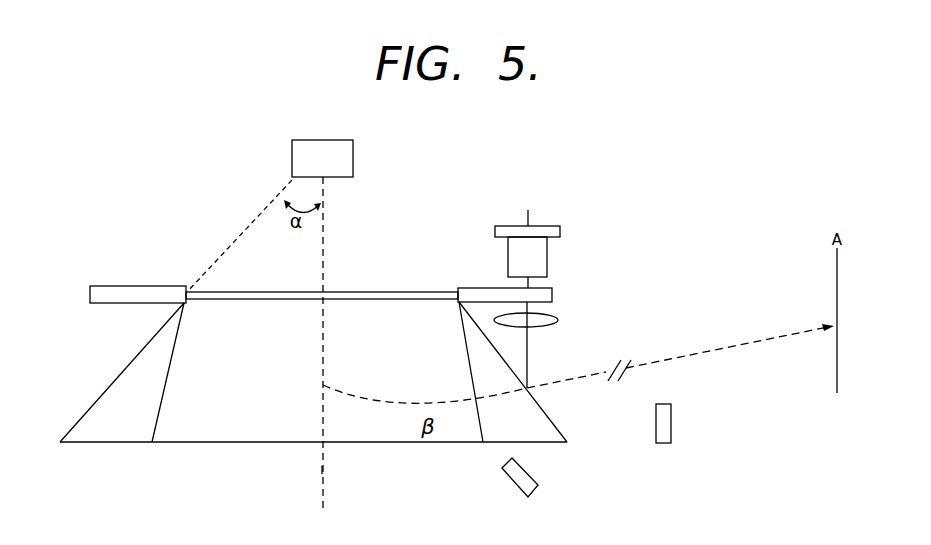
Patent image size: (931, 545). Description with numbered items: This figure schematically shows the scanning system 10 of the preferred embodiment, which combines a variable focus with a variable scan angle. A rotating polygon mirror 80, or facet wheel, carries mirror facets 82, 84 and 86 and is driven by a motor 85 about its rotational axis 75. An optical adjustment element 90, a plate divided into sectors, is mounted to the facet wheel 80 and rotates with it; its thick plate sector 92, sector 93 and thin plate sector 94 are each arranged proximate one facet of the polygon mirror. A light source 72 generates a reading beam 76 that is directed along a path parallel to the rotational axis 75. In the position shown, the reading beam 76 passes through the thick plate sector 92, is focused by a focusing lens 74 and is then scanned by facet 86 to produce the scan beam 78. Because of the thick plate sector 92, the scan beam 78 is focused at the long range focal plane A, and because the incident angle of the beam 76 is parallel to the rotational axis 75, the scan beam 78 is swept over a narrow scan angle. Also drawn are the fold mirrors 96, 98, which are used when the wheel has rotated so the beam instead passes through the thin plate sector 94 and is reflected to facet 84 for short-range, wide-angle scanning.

The inspection system 10 is at (616, 178).
The light source 72 is at (560, 226).
The focusing lens 74 is at (557, 320).
The rotational axis 75 is at (324, 470).
The reading beam 76 is at (532, 283).
The scan beam 78 is at (605, 373).
The rotating polygon mirror 80 is at (205, 449).
The mirror facet 82 is at (100, 397).
The mirror facet 84 is at (248, 443).
The motor 85 is at (322, 158).
The mirror facet 86 is at (557, 427).
The optical adjustment element 90 is at (282, 287).
The thick plate sector 92 is at (468, 288).
The sector 93 is at (140, 286).
The thin plate sector 94 is at (388, 292).
The fold mirror 96 is at (510, 480).
The fold mirror 98 is at (673, 424).